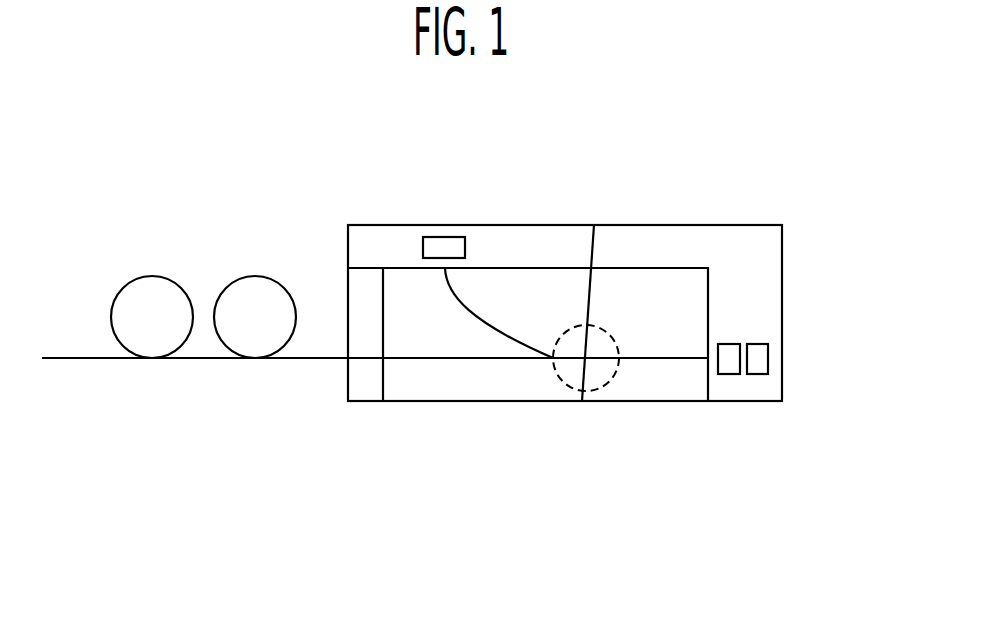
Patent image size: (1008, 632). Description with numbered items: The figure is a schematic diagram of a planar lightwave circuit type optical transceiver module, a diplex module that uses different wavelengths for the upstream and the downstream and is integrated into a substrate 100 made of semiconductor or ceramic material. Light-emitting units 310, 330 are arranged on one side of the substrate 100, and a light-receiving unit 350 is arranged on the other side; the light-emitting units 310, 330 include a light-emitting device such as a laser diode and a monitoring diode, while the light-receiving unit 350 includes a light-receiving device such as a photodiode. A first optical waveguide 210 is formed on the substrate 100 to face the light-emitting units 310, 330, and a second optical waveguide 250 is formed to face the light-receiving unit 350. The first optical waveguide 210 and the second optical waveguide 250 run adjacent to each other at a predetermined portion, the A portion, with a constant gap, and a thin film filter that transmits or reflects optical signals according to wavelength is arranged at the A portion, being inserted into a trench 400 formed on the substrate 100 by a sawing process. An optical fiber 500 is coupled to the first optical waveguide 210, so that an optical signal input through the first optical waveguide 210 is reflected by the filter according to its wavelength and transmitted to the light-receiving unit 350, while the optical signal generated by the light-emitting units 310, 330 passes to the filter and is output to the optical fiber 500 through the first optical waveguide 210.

The substrate 100 is at (782, 273).
The optical fiber 500 is at (250, 277).
The first optical waveguide 210 is at (472, 358).
The second optical waveguide 250 is at (497, 332).
The light-receiving unit 350 is at (443, 237).
The trench 400 is at (595, 246).
The light-emitting device 310 is at (730, 374).
The light-emitting unit 330 is at (758, 374).
The A portion A is at (578, 392).